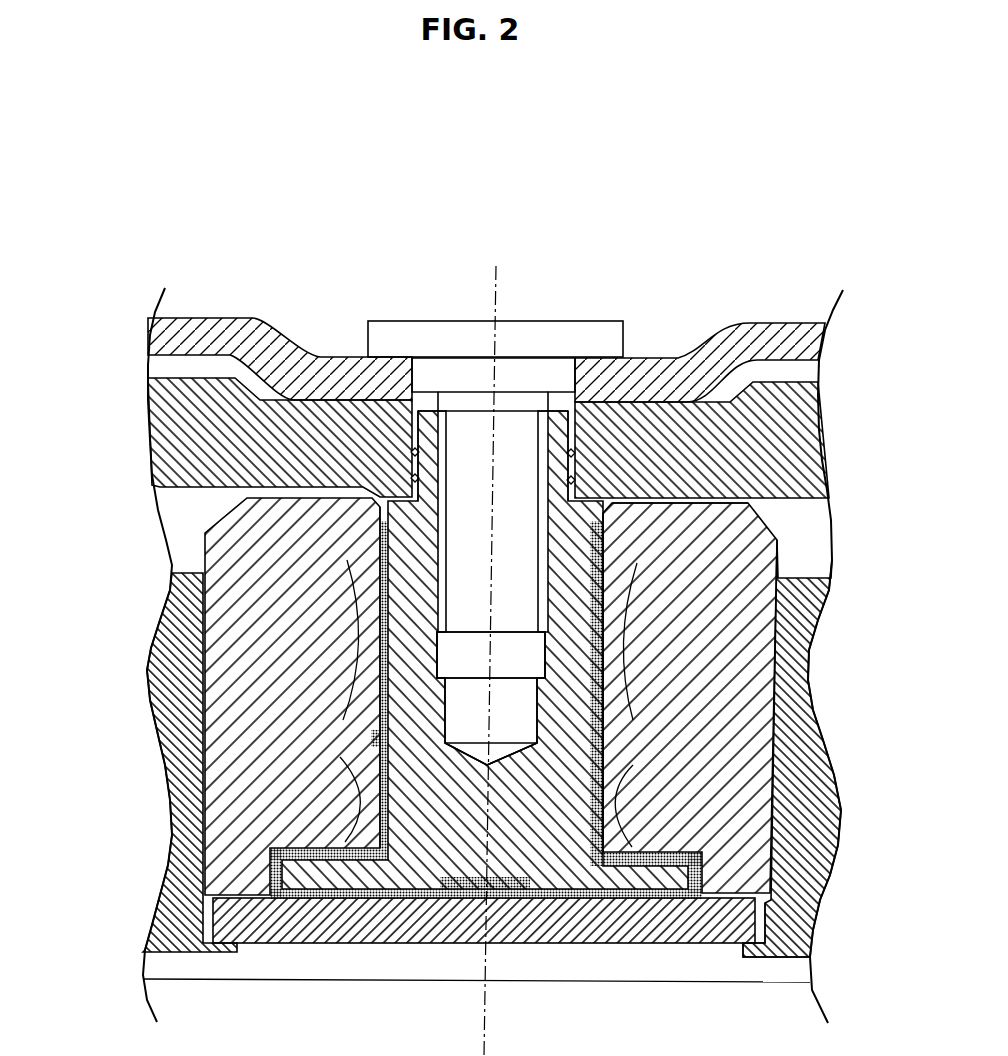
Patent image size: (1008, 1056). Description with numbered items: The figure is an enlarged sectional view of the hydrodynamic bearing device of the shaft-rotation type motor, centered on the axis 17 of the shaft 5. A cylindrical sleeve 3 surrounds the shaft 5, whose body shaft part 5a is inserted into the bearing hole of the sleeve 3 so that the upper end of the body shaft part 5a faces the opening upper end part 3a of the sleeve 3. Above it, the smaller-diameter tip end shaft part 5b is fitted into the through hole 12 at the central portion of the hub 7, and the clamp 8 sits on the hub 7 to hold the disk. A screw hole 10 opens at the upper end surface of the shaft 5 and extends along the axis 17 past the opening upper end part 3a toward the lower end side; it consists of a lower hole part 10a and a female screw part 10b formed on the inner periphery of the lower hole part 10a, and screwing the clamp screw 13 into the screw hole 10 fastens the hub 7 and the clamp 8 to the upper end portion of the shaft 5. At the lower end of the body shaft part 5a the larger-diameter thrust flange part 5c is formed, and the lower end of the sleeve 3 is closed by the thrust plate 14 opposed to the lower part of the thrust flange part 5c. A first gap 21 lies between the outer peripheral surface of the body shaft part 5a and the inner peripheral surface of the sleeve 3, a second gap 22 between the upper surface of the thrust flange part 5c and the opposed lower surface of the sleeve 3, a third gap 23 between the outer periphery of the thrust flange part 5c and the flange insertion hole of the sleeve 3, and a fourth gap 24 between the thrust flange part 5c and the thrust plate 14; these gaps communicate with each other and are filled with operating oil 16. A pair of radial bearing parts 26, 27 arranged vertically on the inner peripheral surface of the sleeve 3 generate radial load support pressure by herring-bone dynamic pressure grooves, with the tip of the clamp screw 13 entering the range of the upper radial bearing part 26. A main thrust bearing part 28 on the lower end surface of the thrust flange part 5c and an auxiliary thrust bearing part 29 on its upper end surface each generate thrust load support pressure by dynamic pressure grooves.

The sleeve 3 is at (200, 533).
The opening upper end part 3a is at (655, 506).
The shaft 5 is at (423, 832).
The body shaft part 5a is at (373, 653).
The tip end shaft part 5b is at (390, 428).
The thrust flange part 5c is at (818, 933).
The hub 7 is at (170, 438).
The clamp 8 is at (228, 327).
The screw hole 10 is at (484, 723).
The lower hole part 10a is at (531, 720).
The female screw part 10b is at (450, 650).
The through hole 12 is at (562, 408).
The clamp screw 13 is at (427, 333).
The thrust plate 14 is at (258, 923).
The operating oil 16 is at (618, 543).
The axis 17 is at (497, 294).
The first gap 21 is at (378, 700).
The second gap 22 is at (308, 848).
The third gap 23 is at (290, 876).
The fourth gap 24 is at (307, 908).
The radial bearing part 26 is at (626, 613).
The radial bearing part 27 is at (624, 787).
The main thrust bearing part 28 is at (670, 903).
The auxiliary thrust bearing part 29 is at (706, 858).